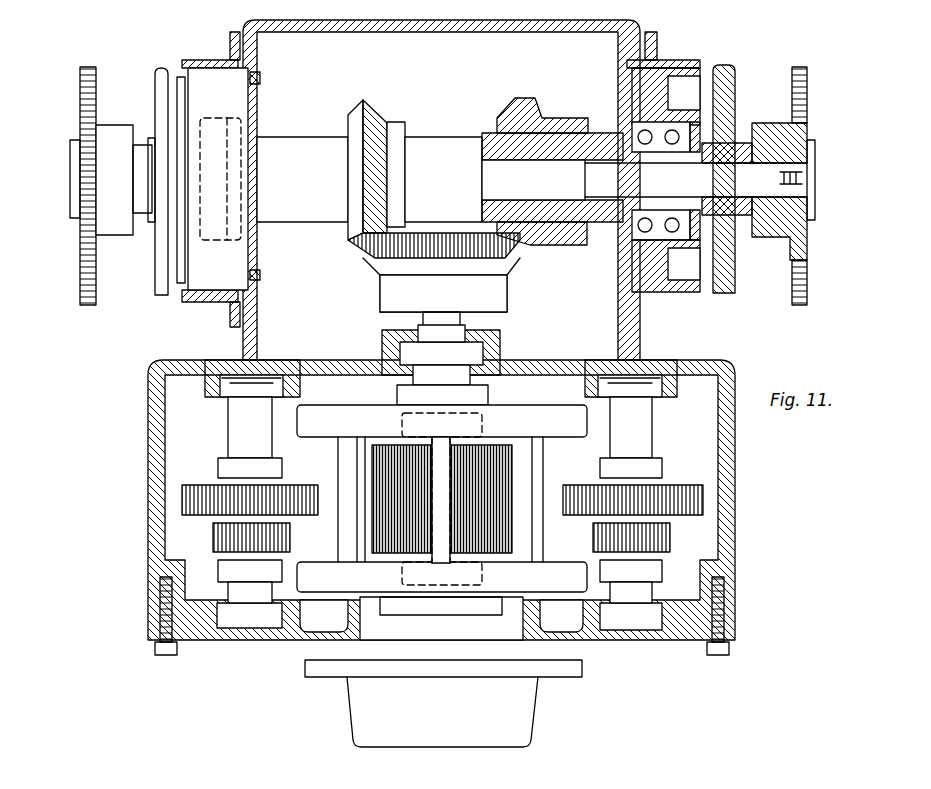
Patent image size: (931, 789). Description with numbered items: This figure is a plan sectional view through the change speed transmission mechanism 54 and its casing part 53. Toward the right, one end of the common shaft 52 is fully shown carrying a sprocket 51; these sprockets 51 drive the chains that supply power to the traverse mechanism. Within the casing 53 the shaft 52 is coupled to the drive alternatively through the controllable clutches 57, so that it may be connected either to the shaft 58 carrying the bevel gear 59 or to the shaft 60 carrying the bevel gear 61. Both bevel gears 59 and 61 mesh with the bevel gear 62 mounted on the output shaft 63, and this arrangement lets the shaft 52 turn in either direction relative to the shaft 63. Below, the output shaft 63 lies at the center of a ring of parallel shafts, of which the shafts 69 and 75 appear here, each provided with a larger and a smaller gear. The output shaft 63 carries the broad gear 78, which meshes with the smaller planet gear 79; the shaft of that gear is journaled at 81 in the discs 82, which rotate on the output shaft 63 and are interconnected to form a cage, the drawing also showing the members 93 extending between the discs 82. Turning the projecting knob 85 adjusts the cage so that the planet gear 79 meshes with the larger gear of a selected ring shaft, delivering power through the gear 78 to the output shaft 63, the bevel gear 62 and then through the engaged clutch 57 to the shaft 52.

The sprocket 51 is at (90, 62).
The common shaft 52 is at (790, 175).
The casing part 53 is at (331, 24).
The transmission mechanism 54 is at (738, 519).
The controllable clutch 57 is at (164, 61).
The shaft 58 is at (598, 132).
The bevel gear 59 is at (518, 99).
The shaft 60 is at (307, 220).
The bevel gear 61 is at (374, 108).
The bevel gear 62 is at (505, 262).
The output shaft 63 is at (462, 322).
The shaft 69 is at (645, 434).
The shaft 75 is at (235, 427).
The broad gear 78 is at (505, 531).
The gear 79 is at (478, 481).
The journal 81 is at (482, 425).
The disc 82 is at (588, 424).
The knob 85 is at (520, 714).
The tie rod 93 is at (338, 460).